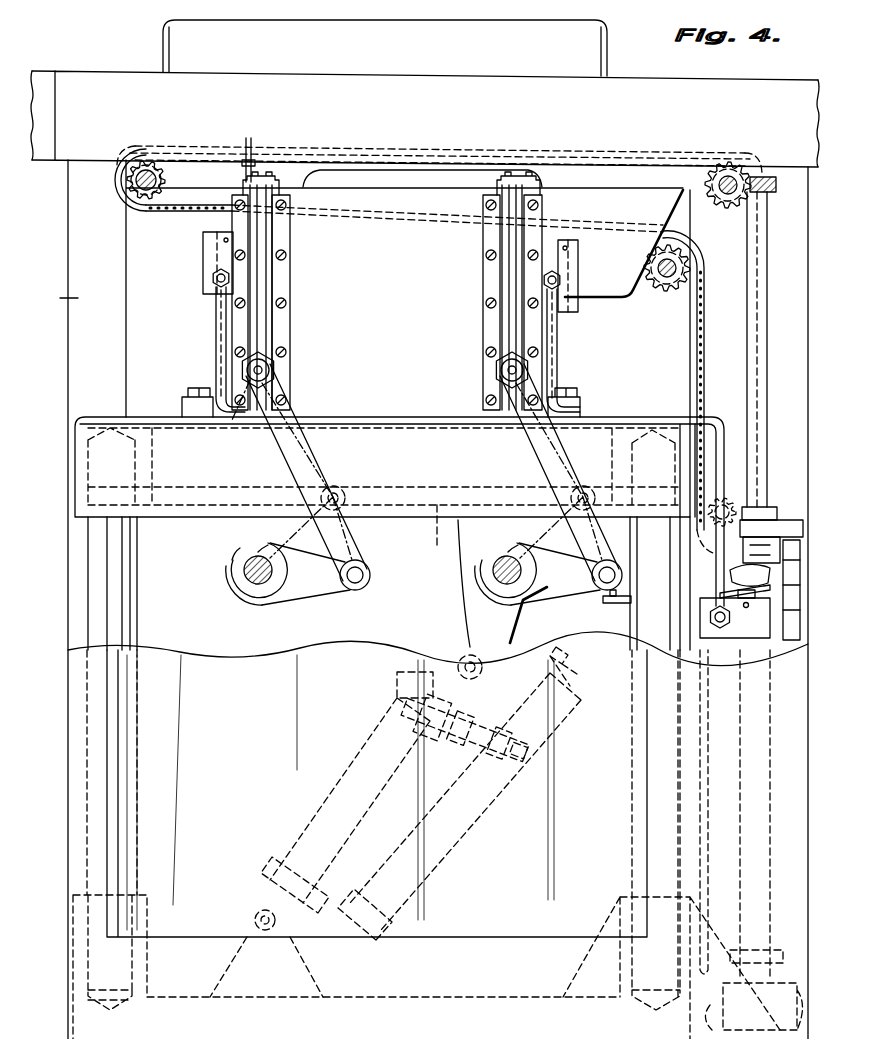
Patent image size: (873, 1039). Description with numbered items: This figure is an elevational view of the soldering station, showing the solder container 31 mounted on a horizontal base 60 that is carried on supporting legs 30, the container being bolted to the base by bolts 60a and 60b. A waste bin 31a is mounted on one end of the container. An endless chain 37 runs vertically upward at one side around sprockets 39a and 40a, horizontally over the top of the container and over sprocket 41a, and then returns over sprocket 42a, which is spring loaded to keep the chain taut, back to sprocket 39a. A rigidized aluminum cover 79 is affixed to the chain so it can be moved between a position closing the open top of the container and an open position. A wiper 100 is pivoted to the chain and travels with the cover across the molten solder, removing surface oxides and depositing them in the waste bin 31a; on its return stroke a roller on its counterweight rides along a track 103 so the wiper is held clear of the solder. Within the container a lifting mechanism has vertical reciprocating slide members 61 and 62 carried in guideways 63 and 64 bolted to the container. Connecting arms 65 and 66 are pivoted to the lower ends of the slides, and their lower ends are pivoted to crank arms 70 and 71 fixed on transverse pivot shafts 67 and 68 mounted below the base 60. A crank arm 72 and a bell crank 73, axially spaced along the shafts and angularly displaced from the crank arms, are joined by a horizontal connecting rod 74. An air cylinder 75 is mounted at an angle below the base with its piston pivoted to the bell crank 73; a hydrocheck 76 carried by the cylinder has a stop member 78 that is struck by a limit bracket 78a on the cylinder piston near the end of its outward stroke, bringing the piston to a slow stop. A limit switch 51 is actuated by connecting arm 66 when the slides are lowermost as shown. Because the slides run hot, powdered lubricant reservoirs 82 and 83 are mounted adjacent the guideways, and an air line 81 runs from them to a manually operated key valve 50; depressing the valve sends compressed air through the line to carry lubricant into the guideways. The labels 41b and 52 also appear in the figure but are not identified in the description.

The supporting legs 30 is at (140, 623).
The solder container 31 is at (438, 599).
The waste bin 31a is at (617, 303).
The endless chain 37 is at (163, 213).
The sprocket 39a is at (735, 495).
The sprocket 40a is at (752, 200).
The sprocket 41a is at (118, 183).
The frame side member 41b is at (53, 299).
The sprocket 42a is at (692, 242).
The manually operated pressure valve 50 is at (770, 545).
The limit switch 51 is at (603, 604).
The top cover 52 is at (658, 128).
The horizontal base 60 is at (385, 457).
The bolt 60a is at (197, 388).
The bolt 60b is at (578, 395).
The slide member 61 is at (262, 266).
The slide member 62 is at (505, 266).
The guideway 63 is at (280, 330).
The guideway 64 is at (528, 328).
The connecting arm 65 is at (283, 398).
The connecting arm 66 is at (492, 391).
The transverse pivot shaft 67 is at (255, 583).
The transverse pivot shaft 68 is at (493, 577).
The crank arm 70 is at (325, 585).
The crank arm 71 is at (553, 598).
The crank arm 72 is at (268, 545).
The bell crank 73 is at (518, 545).
The horizontal connecting rod 74 is at (431, 535).
The air cylinder 75 is at (330, 798).
The hydrocheck 76 is at (457, 848).
The stop member 78 is at (576, 680).
The limit bracket 78a is at (530, 757).
The rigidized aluminum cover 79 is at (458, 145).
The air line 81 is at (215, 318).
The reservoir 82 is at (568, 252).
The reservoir 83 is at (210, 265).
The wiper 100 is at (247, 158).
The track 103 is at (367, 175).